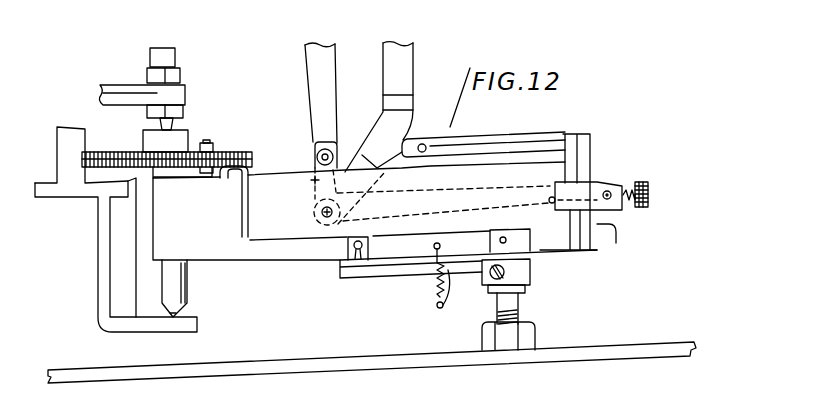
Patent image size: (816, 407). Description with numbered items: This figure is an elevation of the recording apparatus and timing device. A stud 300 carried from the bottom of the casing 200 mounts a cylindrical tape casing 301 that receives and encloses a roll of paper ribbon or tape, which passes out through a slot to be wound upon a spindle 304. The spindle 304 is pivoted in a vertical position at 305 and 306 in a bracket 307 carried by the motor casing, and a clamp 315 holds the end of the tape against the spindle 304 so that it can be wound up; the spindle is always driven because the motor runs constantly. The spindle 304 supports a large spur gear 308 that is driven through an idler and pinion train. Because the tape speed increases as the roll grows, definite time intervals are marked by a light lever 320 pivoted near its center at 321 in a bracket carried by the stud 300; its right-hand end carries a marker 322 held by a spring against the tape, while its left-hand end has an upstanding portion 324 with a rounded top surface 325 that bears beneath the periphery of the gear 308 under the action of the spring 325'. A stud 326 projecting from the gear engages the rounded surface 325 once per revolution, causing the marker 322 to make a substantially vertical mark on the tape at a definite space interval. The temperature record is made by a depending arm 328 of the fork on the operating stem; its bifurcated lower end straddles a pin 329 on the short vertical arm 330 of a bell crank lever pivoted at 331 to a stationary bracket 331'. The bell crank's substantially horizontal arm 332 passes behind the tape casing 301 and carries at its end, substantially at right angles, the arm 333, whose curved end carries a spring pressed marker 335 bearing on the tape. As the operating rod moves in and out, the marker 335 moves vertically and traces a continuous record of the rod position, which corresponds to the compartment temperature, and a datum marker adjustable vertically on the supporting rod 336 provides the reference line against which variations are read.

The casing 200 is at (273, 367).
The stud 300 is at (521, 306).
The cylindrical tape casing 301 is at (535, 155).
The spindle 304 is at (173, 295).
The pivot 305 is at (173, 317).
The pivot 306 is at (174, 116).
The bracket 307 is at (110, 258).
The large spur gear 308 is at (243, 149).
The clamp 315 is at (188, 276).
The light lever 320 is at (302, 251).
The pivot 321 is at (358, 261).
The marker 322 is at (507, 240).
The upstanding portion 324 is at (245, 205).
The rounded top surface 325 is at (209, 186).
The spring 325' is at (420, 275).
The stud 326 is at (221, 168).
The depending arm 328 is at (317, 62).
The pin 329 is at (337, 152).
The short vertical arm 330 is at (294, 179).
The pivot 331 is at (331, 200).
The stationary bracket 331' is at (400, 107).
The horizontal arm 332 is at (477, 194).
The arm 333 is at (618, 211).
The spring pressed marker 335 is at (549, 200).
The supporting rod 336 is at (615, 245).